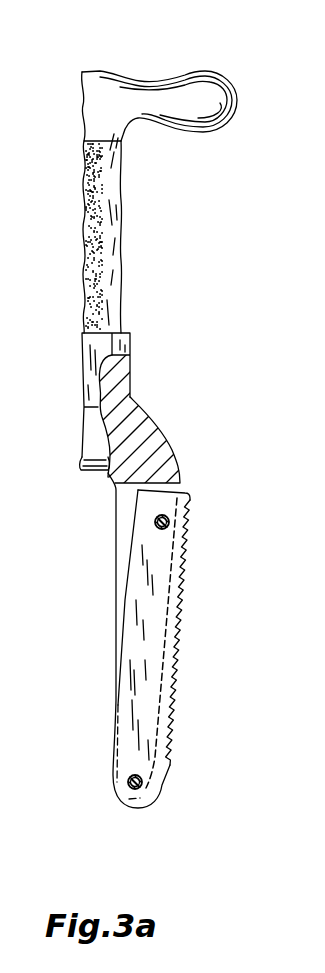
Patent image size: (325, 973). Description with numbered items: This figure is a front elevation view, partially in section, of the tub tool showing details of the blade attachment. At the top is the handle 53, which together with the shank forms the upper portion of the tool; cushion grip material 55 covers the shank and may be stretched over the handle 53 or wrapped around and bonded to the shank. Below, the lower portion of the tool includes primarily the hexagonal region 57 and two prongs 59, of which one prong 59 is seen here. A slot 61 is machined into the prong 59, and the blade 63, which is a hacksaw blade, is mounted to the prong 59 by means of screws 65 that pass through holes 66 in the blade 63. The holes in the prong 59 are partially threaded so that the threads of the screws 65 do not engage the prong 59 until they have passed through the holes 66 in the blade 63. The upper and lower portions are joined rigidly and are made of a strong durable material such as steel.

The handle 53 is at (217, 72).
The cushion grip material 55 is at (122, 238).
The hexagonal region 57 is at (132, 340).
The prong 59 is at (116, 637).
The slot 61 is at (182, 485).
The blade 63 is at (176, 656).
The screw 65 is at (168, 518).
The hole 66 is at (155, 526).